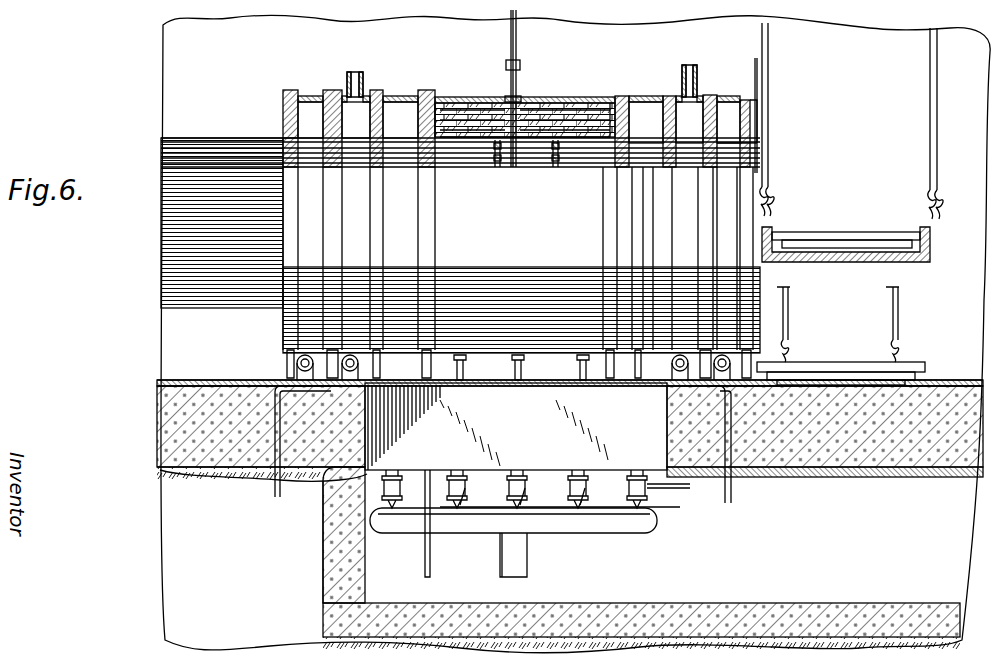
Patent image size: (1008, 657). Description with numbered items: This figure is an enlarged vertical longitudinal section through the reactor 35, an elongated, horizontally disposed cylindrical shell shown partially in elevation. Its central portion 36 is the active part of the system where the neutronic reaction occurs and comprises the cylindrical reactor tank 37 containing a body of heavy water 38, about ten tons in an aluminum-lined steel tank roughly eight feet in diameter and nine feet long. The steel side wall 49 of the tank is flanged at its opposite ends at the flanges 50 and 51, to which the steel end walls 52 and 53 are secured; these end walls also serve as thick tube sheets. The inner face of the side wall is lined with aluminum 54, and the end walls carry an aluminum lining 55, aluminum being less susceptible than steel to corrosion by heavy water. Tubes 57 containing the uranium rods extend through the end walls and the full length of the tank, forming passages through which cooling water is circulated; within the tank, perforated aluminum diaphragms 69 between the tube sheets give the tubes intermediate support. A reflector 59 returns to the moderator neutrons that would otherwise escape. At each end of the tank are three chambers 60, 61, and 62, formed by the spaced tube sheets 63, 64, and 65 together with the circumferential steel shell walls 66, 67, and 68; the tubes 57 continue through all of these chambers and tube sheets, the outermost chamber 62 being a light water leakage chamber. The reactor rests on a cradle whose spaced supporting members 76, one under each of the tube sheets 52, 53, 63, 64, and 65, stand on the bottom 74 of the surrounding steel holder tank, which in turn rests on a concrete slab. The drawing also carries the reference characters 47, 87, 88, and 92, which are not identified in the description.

The reactor 35 is at (276, 131).
The central portion 36 is at (484, 92).
The reactor tank 37 is at (532, 90).
The body of heavy water 38 is at (465, 140).
The wall 47 is at (752, 113).
The side wall 49 is at (568, 104).
The flange 50 is at (612, 99).
The flange 51 is at (438, 100).
The end wall 52 is at (620, 96).
The end wall 53 is at (430, 92).
The aluminum lining 54 is at (599, 98).
The aluminum lining 55 is at (425, 124).
The tubes 57 is at (728, 158).
The reflector 59 is at (538, 106).
The chamber 60 is at (669, 102).
The chamber 61 is at (350, 80).
The chamber 62 is at (292, 108).
The tube sheet 63 is at (380, 98).
The tube sheet 64 is at (337, 90).
The tube sheet 65 is at (290, 121).
The steel shell wall 66 is at (398, 97).
The steel shell wall 67 is at (375, 93).
The steel shell wall 68 is at (307, 95).
The perforated aluminum diaphragm 69 is at (497, 168).
The tank bottom 74 is at (940, 388).
The supporting member 76 is at (278, 358).
The wall 87 is at (762, 108).
The hanger rods 88 is at (762, 165).
The rod 92 is at (753, 62).